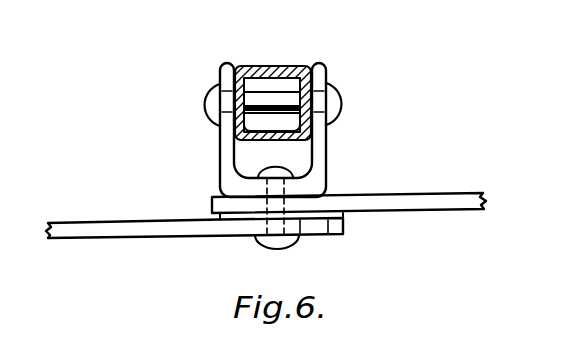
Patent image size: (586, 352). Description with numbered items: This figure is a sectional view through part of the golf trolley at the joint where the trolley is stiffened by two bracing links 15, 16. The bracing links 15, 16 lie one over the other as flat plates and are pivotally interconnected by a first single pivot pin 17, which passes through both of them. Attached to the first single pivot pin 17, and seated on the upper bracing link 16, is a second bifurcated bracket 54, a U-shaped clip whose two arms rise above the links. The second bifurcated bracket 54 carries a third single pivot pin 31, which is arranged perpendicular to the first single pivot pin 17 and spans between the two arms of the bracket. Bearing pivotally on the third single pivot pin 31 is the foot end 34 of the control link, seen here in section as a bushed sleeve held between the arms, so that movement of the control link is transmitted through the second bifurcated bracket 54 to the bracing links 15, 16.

The bracing link 15 is at (102, 230).
The bracing link 16 is at (384, 203).
The first single pivot pin 17 is at (279, 238).
The third single pivot pin 31 is at (265, 98).
The foot end 34 is at (288, 70).
The second bifurcated bracket 54 is at (327, 167).